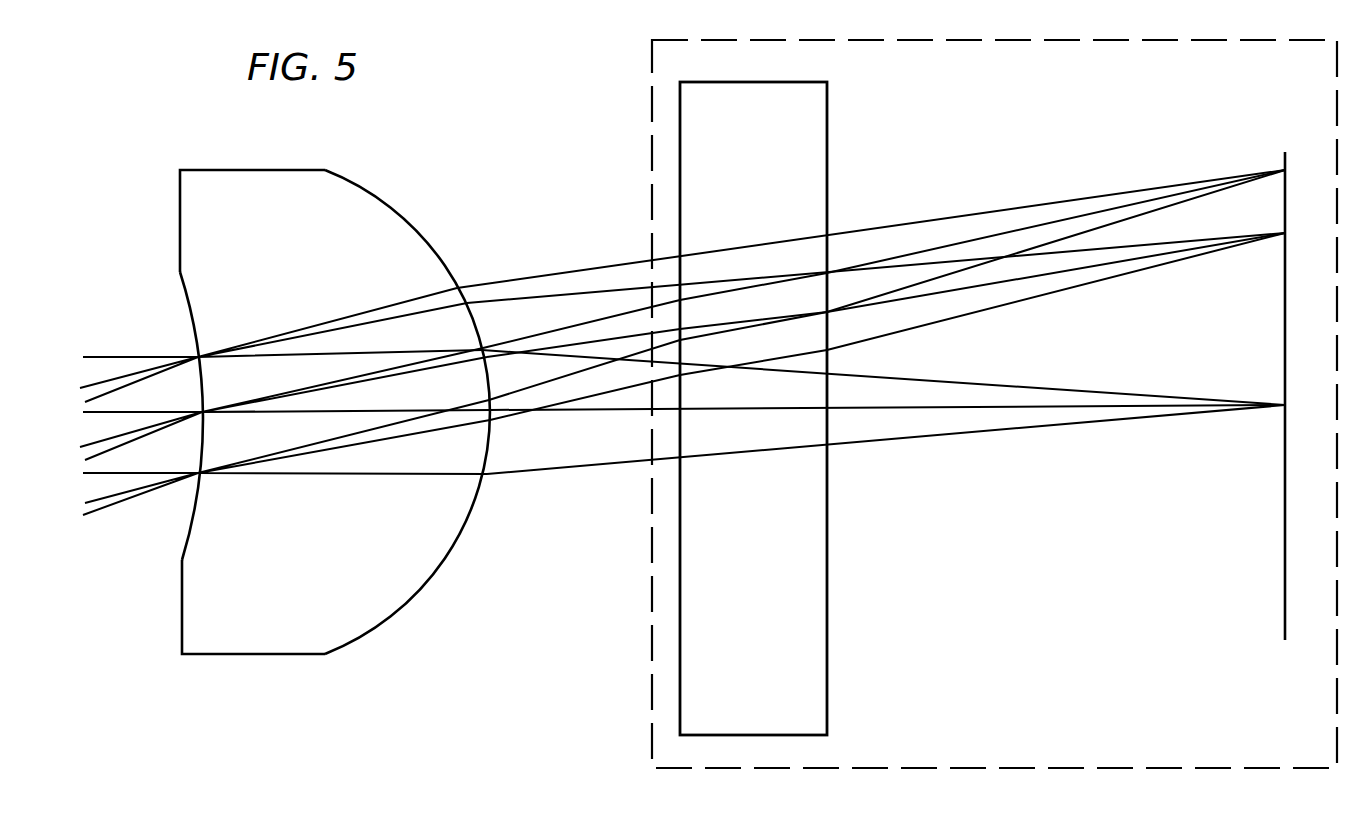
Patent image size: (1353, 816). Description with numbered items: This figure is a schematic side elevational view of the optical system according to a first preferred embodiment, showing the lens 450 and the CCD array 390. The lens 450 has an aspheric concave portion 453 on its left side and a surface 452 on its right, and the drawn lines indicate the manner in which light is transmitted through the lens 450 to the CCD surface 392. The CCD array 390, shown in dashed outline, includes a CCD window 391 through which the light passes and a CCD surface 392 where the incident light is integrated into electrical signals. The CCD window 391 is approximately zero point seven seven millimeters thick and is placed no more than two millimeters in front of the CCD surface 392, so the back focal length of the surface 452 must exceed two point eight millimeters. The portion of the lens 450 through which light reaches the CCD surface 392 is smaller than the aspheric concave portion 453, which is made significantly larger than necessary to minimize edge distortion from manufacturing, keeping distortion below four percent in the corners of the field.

The lens 450 is at (310, 440).
The surface 452 is at (407, 602).
The aspheric concave portion 453 is at (191, 522).
The CCD array 390 is at (930, 769).
The CCD window 391 is at (830, 125).
The CCD surface 392 is at (1285, 206).